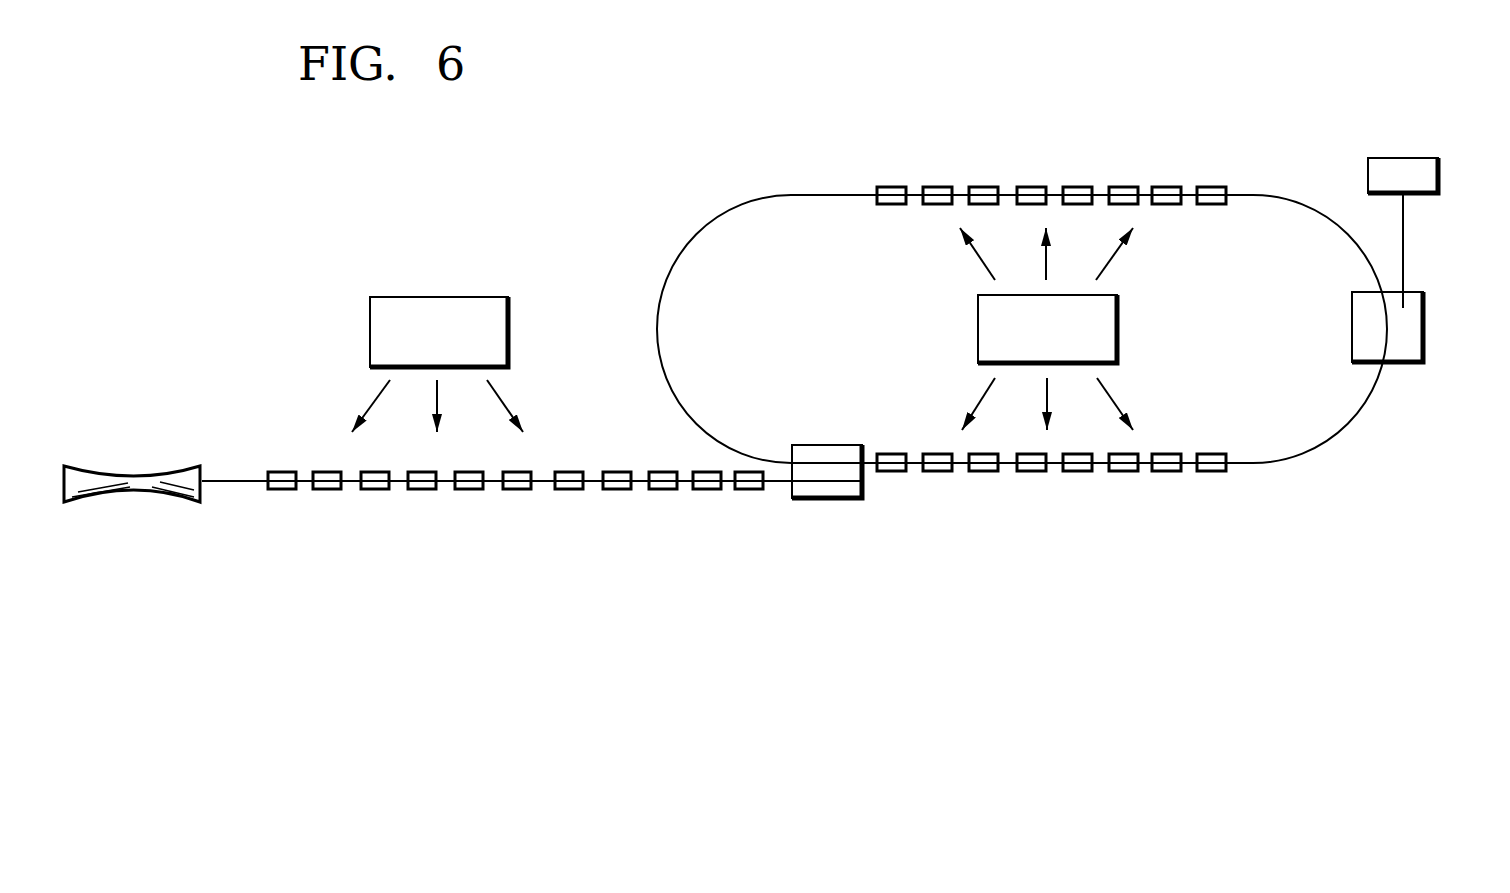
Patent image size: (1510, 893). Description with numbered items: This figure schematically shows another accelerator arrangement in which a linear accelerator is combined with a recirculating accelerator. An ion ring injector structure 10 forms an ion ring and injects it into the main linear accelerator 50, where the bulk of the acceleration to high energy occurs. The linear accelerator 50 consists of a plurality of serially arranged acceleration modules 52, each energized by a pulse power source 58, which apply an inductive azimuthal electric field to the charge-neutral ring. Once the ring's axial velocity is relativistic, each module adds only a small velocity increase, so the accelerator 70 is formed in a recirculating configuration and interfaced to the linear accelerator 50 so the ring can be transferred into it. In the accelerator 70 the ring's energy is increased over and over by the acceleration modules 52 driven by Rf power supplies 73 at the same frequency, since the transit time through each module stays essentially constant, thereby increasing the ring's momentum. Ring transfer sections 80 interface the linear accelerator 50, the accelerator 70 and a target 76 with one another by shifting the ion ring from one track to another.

The ion ring injector structure 10 is at (150, 492).
The main linear accelerator 50 is at (422, 497).
The acceleration modules 52 is at (1076, 472).
The pulse power source 58 is at (490, 297).
The accelerator 70 is at (1053, 160).
The Rf power supplies 73 is at (1117, 328).
The target 76 is at (1393, 158).
The ring transfer section 80 is at (823, 498).